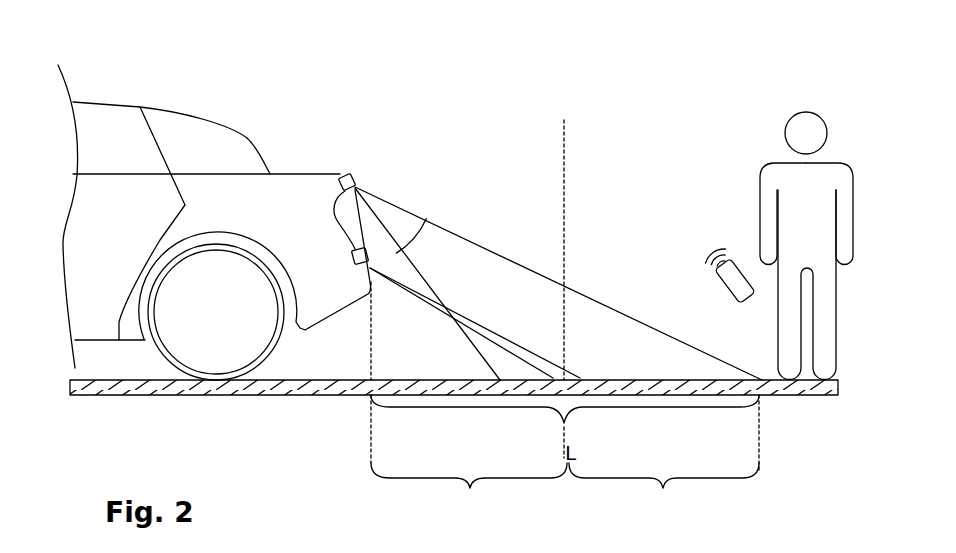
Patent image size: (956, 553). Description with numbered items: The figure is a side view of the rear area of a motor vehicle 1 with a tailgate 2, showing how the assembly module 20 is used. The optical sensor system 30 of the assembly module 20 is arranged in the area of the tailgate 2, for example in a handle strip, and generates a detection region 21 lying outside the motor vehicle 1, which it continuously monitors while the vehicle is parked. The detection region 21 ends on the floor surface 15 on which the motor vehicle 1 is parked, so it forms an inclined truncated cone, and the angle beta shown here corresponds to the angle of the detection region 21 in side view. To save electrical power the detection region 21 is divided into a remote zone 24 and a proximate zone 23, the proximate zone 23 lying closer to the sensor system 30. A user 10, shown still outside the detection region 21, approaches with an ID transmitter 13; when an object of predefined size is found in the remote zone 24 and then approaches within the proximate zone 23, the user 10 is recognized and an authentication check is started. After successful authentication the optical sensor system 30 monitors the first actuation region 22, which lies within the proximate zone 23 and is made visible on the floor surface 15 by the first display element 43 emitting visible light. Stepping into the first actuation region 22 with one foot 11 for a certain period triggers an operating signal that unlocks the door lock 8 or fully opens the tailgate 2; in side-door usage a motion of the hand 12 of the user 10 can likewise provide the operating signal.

The motor vehicle 1 is at (184, 94).
The tailgate 2 is at (302, 173).
The door lock 8 is at (357, 264).
The user 10 is at (773, 196).
The foot 11 is at (780, 372).
The hand 12 is at (767, 252).
The ID transmitter 13 is at (737, 287).
The floor surface 15 is at (797, 397).
The assembly module 20 is at (393, 104).
The detection region 21 is at (597, 323).
The first actuation region 22 is at (558, 378).
The proximate zone 23 is at (469, 496).
The remote zone 24 is at (664, 495).
The optical sensor system 30 is at (352, 177).
The first display element 43 is at (371, 282).